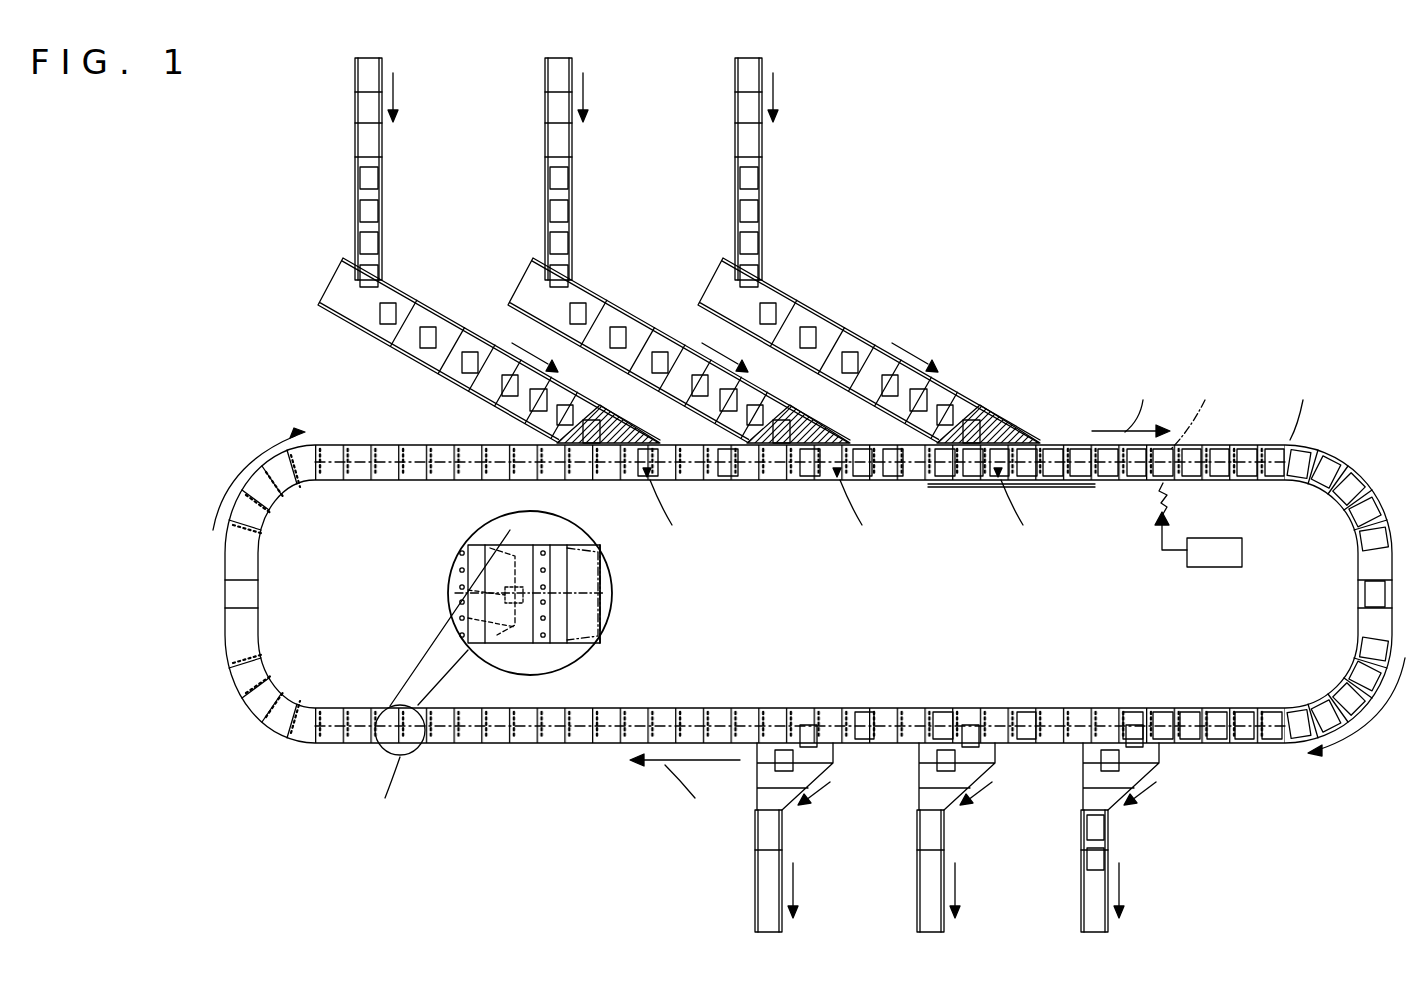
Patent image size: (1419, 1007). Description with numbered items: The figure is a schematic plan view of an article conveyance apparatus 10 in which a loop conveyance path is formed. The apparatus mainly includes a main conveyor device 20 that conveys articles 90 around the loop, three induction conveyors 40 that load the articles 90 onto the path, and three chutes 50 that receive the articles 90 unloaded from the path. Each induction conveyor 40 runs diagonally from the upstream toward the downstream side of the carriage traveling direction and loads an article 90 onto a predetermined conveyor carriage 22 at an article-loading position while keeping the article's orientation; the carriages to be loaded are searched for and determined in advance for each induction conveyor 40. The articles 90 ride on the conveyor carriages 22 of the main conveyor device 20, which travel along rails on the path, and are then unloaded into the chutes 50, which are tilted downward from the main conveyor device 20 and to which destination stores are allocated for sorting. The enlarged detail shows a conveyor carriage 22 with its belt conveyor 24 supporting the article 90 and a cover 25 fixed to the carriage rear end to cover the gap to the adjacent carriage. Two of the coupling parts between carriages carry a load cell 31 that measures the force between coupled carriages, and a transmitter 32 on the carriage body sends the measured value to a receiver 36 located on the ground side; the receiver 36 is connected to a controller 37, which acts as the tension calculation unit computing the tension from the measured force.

The article conveyance apparatus 10 is at (1030, 290).
The main conveyor device 20 is at (530, 750).
The conveyor carriage 22 is at (462, 440).
The belt conveyor 24 is at (523, 550).
The cover 25 is at (565, 635).
The load cell 31 is at (462, 577).
The transmitter 32 is at (462, 605).
The receiver 36 is at (1155, 528).
The controller 37 is at (1212, 568).
The induction conveyor 40 is at (426, 290).
The chute 50 is at (768, 888).
The article 90 is at (378, 315).